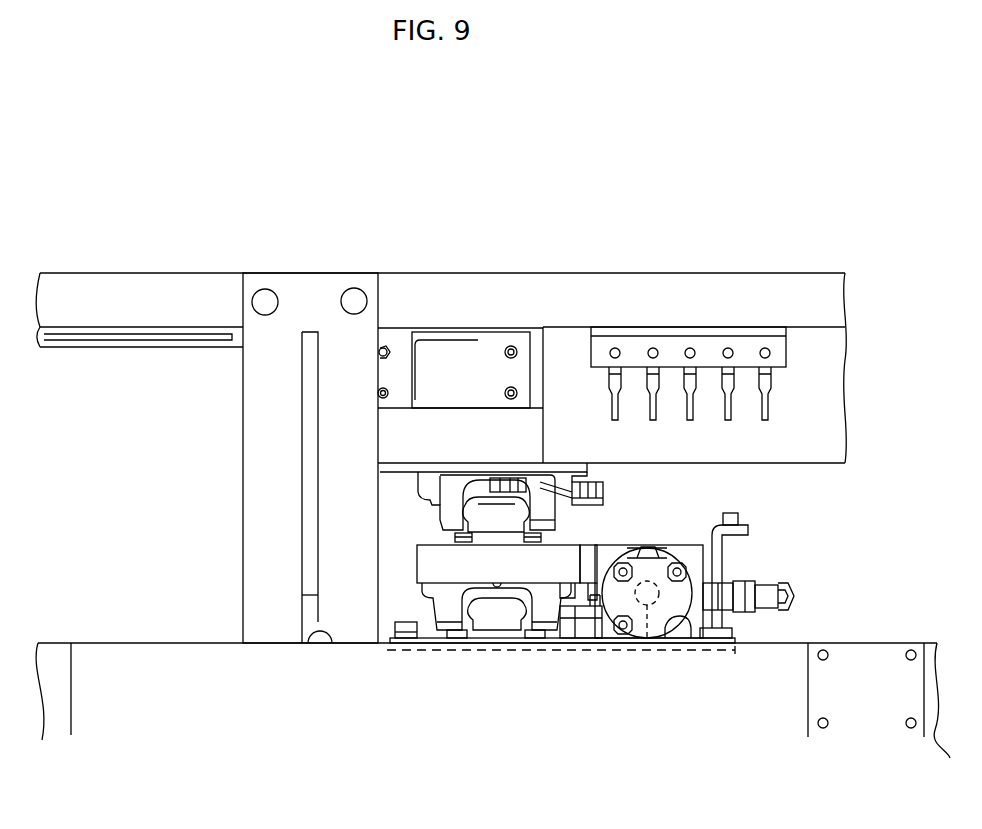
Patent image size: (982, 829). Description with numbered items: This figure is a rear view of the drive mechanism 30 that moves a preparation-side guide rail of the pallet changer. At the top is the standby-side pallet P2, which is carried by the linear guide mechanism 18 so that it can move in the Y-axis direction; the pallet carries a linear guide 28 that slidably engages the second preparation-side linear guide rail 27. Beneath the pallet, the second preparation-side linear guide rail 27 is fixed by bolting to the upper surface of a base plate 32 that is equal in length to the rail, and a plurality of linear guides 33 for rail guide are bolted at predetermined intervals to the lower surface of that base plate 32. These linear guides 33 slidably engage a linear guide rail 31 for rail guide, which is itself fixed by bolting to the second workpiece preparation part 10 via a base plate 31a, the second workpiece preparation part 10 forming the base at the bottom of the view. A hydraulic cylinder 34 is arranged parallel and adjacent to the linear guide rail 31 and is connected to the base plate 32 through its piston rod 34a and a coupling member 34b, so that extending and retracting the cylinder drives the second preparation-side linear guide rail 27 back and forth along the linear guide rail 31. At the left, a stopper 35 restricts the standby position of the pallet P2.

The standby-side pallet P2 is at (411, 272).
The second workpiece preparation part 10 is at (113, 642).
The linear guide mechanism 18 is at (403, 502).
The second preparation-side linear guide rail 27 is at (483, 520).
The linear guide 28 is at (558, 512).
The drive mechanism 30 is at (402, 557).
The linear guide rail for rail guide 31 is at (497, 630).
The base plate 31a is at (543, 652).
The base plate 32 is at (413, 570).
The linear guide for rail guide 33 is at (452, 610).
The hydraulic cylinder 34 is at (673, 543).
The piston rod 34a is at (647, 650).
The coupling member 34b is at (657, 545).
The stopper 35 is at (243, 430).